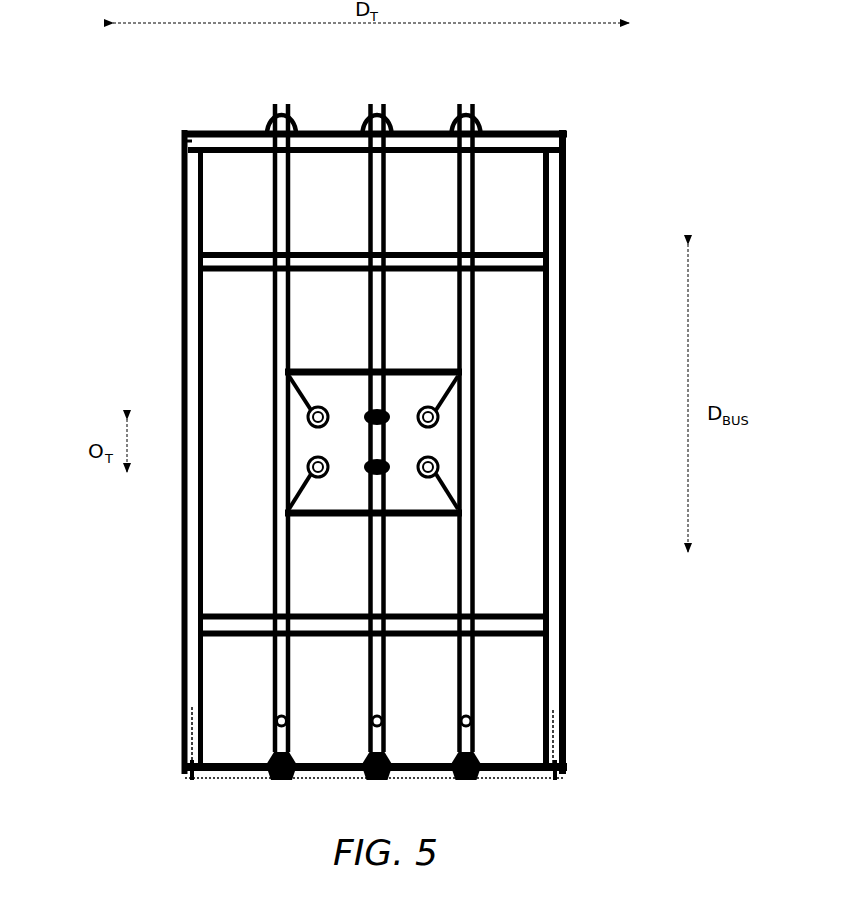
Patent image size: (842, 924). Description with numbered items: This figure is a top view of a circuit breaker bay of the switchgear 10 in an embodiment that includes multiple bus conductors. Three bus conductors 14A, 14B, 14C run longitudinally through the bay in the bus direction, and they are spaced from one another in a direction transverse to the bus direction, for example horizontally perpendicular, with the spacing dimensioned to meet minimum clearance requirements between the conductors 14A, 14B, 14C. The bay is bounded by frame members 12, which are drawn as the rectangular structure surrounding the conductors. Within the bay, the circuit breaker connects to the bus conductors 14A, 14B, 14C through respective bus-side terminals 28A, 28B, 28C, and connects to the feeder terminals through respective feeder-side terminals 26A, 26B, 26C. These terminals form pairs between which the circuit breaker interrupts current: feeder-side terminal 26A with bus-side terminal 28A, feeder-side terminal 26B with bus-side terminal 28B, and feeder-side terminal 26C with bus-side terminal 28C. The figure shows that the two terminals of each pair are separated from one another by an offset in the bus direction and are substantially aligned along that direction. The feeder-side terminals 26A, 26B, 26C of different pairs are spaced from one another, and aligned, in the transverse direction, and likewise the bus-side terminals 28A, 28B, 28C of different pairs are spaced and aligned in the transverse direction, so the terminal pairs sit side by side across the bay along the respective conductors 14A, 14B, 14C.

The switchgear 10 is at (66, 104).
The frame member 12 is at (523, 130).
The bus conductor 14A is at (479, 166).
The bus conductor 14B is at (389, 166).
The bus conductor 14C is at (293, 166).
The feeder-side terminal 26A is at (418, 478).
The feeder-side terminal 26B is at (388, 463).
The feeder-side terminal 26C is at (397, 520).
The bus-side terminal 28A is at (428, 407).
The bus-side terminal 28B is at (358, 417).
The bus-side terminal 28C is at (317, 407).